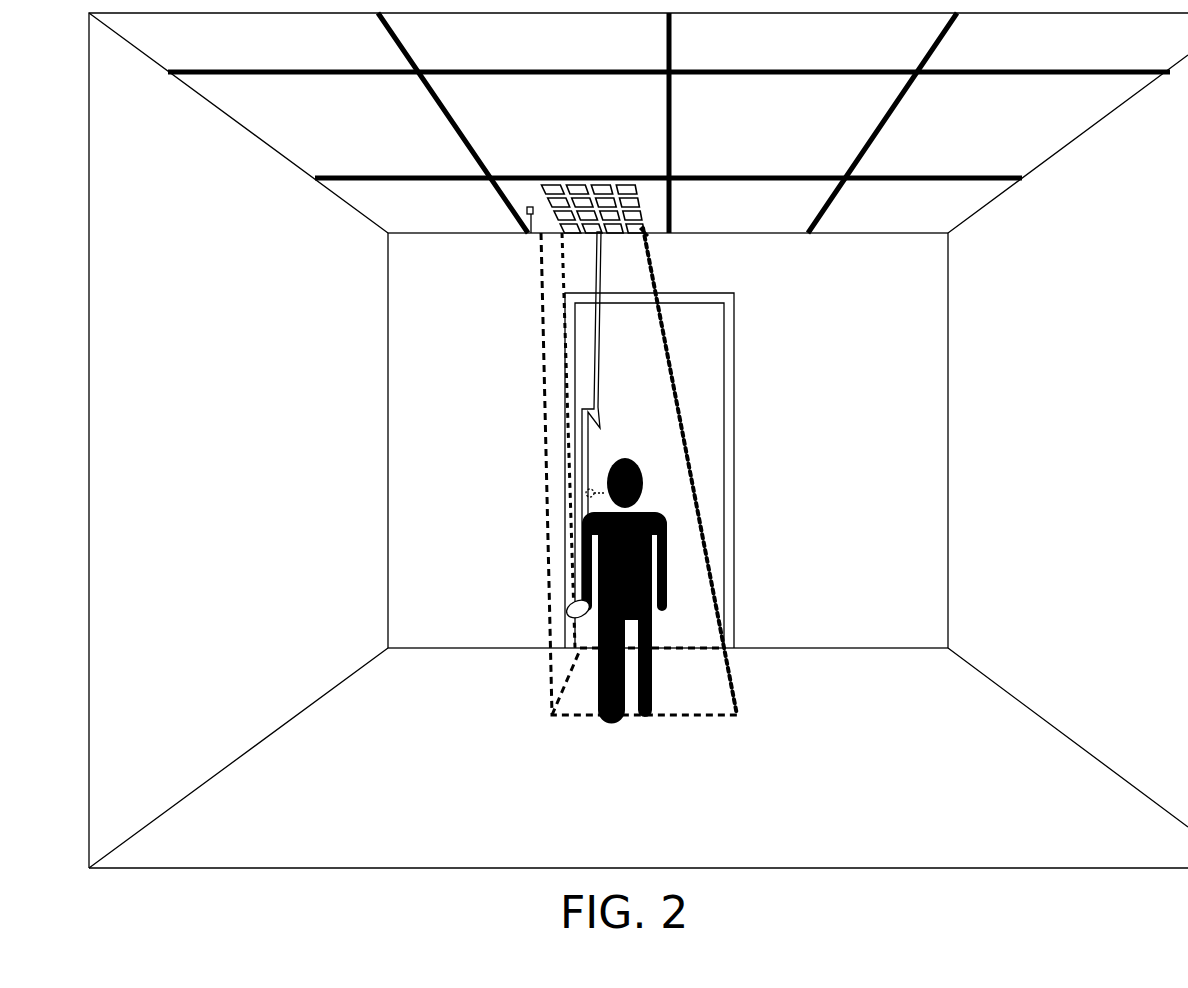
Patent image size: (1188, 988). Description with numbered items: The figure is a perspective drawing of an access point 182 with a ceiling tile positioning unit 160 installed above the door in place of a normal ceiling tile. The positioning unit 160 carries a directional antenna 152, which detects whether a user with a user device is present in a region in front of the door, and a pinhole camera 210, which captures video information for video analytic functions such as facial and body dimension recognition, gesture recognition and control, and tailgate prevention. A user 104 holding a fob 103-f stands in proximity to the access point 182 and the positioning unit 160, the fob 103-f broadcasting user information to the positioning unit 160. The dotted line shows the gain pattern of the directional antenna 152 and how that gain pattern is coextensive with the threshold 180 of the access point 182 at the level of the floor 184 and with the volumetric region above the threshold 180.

The fob 103-f is at (567, 610).
The user 104 is at (577, 552).
The directional antenna 152 is at (593, 172).
The ceiling tile positioning unit 160 is at (657, 226).
The threshold 180 is at (702, 688).
The access point 182 is at (730, 448).
The floor 184 is at (963, 737).
The pinhole camera 210 is at (530, 233).